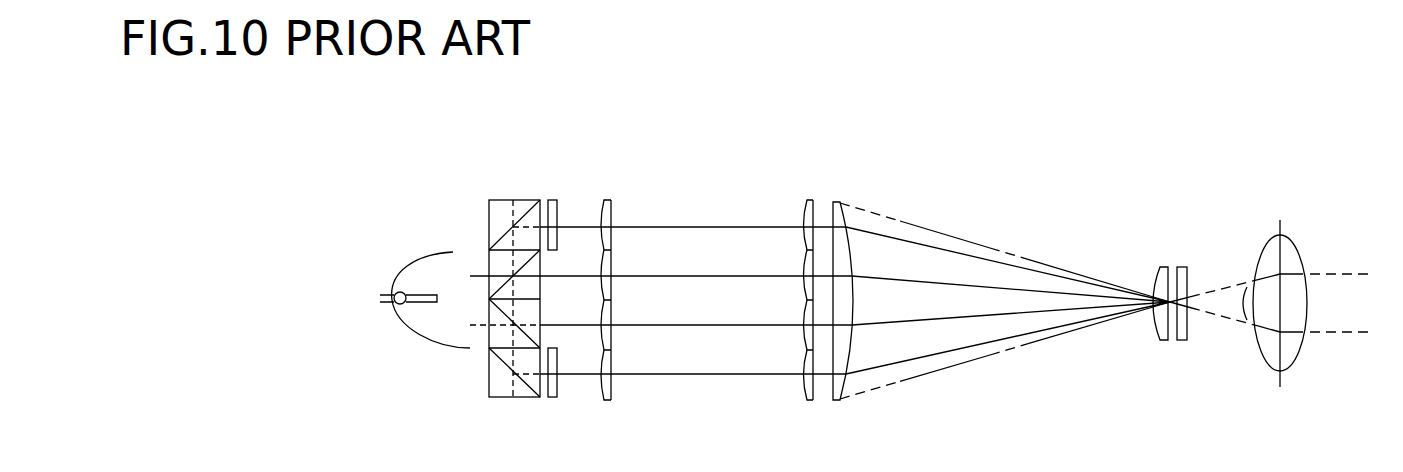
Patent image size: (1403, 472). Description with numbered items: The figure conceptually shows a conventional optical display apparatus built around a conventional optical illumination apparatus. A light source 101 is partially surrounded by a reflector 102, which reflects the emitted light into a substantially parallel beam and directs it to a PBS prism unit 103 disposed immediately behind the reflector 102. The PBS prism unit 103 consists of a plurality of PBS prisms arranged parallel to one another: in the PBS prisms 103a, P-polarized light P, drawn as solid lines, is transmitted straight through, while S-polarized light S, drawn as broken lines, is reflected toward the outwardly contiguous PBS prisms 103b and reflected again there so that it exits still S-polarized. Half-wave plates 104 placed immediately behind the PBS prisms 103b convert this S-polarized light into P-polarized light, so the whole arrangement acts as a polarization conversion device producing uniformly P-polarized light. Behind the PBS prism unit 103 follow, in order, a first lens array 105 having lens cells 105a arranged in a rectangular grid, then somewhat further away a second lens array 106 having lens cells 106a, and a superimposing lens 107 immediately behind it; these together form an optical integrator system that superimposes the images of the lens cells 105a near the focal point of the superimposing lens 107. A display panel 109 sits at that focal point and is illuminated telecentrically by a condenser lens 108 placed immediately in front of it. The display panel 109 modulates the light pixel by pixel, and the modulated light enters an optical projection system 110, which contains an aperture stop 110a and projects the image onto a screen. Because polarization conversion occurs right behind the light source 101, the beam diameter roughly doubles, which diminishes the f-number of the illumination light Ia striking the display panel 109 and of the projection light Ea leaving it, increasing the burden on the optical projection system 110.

The light source 101 is at (394, 293).
The reflector 102 is at (410, 268).
The PBS prism unit 103 is at (462, 274).
The PBS prism 103a is at (488, 262).
The PBS prism 103b is at (462, 405).
The half-wave plate 104 is at (557, 217).
The first lens array 105 is at (642, 288).
The lens cell 105a is at (607, 390).
The second lens array 106 is at (778, 284).
The lens cell 106a is at (807, 390).
The superimposing lens 107 is at (843, 210).
The condenser lens 108 is at (1160, 265).
The display panel 109 is at (1182, 265).
The optical projection system 110 is at (1323, 287).
The aperture stop 110a is at (1283, 380).
The S-polarized light S is at (478, 275).
The P-polarized light P is at (480, 277).
The illumination light Ia is at (1045, 352).
The projection light Ea is at (1221, 336).